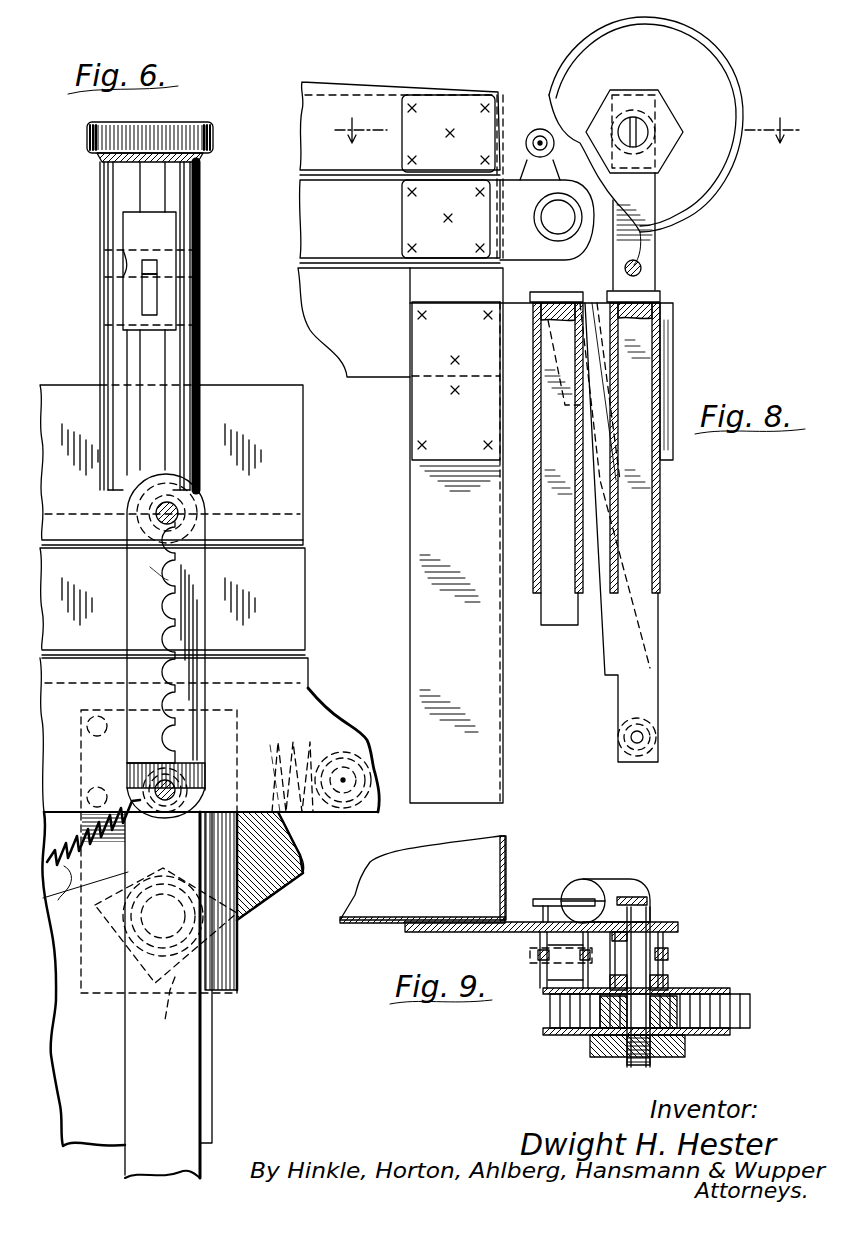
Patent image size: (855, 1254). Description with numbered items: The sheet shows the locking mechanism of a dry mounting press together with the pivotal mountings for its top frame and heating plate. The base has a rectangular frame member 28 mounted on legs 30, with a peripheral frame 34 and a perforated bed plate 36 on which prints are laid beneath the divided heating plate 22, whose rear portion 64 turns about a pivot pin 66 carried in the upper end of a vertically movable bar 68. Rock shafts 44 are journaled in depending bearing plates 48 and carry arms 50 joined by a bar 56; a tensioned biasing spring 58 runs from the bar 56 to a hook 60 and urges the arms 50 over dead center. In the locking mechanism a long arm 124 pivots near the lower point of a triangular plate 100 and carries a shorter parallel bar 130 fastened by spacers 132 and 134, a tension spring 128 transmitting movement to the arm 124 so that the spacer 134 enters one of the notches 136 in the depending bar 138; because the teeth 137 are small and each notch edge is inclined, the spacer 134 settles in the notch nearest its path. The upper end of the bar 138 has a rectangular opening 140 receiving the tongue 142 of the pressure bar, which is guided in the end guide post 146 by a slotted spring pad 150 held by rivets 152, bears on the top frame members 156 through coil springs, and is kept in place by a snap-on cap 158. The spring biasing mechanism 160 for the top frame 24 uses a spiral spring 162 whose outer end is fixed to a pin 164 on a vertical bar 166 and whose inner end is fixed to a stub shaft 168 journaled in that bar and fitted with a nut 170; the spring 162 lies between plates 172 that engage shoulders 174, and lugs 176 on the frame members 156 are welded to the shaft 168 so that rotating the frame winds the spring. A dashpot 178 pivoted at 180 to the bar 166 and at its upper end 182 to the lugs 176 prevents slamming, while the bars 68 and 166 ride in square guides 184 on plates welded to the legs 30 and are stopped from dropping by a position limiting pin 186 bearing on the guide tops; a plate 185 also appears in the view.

In FIG. 6, the heating plate 22 is at (319, 591).
In FIG. 8, the heating plate 22 is at (295, 185).
In FIG. 6, the top frame 24 is at (249, 379).
In FIG. 8, the top frame 24 is at (363, 82).
In FIG. 6, the frame member 28 is at (360, 712).
In FIG. 9, the frame member 28 is at (518, 863).
In FIG. 8, the legs 30 is at (475, 760).
In FIG. 6, the peripheral frame 34 is at (300, 690).
In FIG. 8, the peripheral frame 34 is at (320, 303).
In FIG. 8, the bed plate 36 is at (280, 268).
In FIG. 6, the rock shaft 44 is at (166, 953).
In FIG. 6, the bearing plate 48 is at (120, 843).
In FIG. 6, the arm 50 is at (272, 878).
In FIG. 6, the bar 56 is at (345, 760).
In FIG. 6, the biasing spring 58 is at (298, 740).
In FIG. 8, the hook 60 is at (327, 213).
In FIG. 6, the rear portion 64 is at (291, 629).
In FIG. 8, the pivot pin 66 is at (545, 230).
In FIG. 9, the pivot pin 66 is at (565, 1020).
In FIG. 8, the vertically movable bar 68 is at (563, 615).
In FIG. 9, the vertically movable bar 68 is at (560, 967).
In FIG. 6, the triangular plate 100 is at (216, 1066).
In FIG. 6, the arm 124 is at (190, 1093).
In FIG. 6, the tension spring 128 is at (93, 858).
In FIG. 6, the bar 130 is at (192, 560).
In FIG. 6, the spacer 132 is at (176, 778).
In FIG. 6, the spacer 134 is at (178, 512).
In FIG. 6, the notches 136 is at (180, 600).
In FIG. 6, the teeth 137 is at (150, 633).
In FIG. 6, the depending bar 138 is at (138, 350).
In FIG. 6, the rectangular opening 140 is at (160, 272).
In FIG. 6, the tongue 142 is at (160, 292).
In FIG. 6, the end guide post 146 is at (99, 204).
In FIG. 6, the spring pad 150 is at (110, 243).
In FIG. 6, the rivets 152 is at (115, 285).
In FIG. 6, the top frame members 156 is at (285, 412).
In FIG. 8, the top frame members 156 is at (305, 100).
In FIG. 6, the caps 158 is at (211, 120).
In FIG. 8, the spring biasing mechanism 160 is at (580, 28).
In FIG. 9, the spring biasing mechanism 160 is at (725, 1041).
In FIG. 8, the spiral spring 162 is at (688, 48).
In FIG. 9, the spiral spring 162 is at (752, 1018).
In FIG. 8, the pin 164 is at (642, 266).
In FIG. 8, the vertical bar 166 is at (660, 532).
In FIG. 9, the vertical bar 166 is at (662, 926).
In FIG. 8, the stub shaft 168 is at (648, 148).
In FIG. 9, the stub shaft 168 is at (678, 1000).
In FIG. 8, the nut 170 is at (650, 118).
In FIG. 9, the nut 170 is at (655, 1065).
In FIG. 9, the plates 172 is at (545, 1000).
In FIG. 9, the shoulders 174 is at (668, 975).
In FIG. 8, the lugs 176 is at (510, 100).
In FIG. 9, the lugs 176 is at (460, 934).
In FIG. 8, the dashpot 178 is at (612, 640).
In FIG. 9, the dashpot 178 is at (612, 878).
In FIG. 8, the pivot 180 is at (637, 745).
In FIG. 8, the upper end 182 is at (540, 136).
In FIG. 9, the upper end 182 is at (510, 922).
In FIG. 8, the guides 184 is at (542, 488).
In FIG. 8, the plate 185 is at (670, 335).
In FIG. 8, the position limiting pin 186 is at (530, 295).
In FIG. 9, the position limiting pin 186 is at (672, 945).